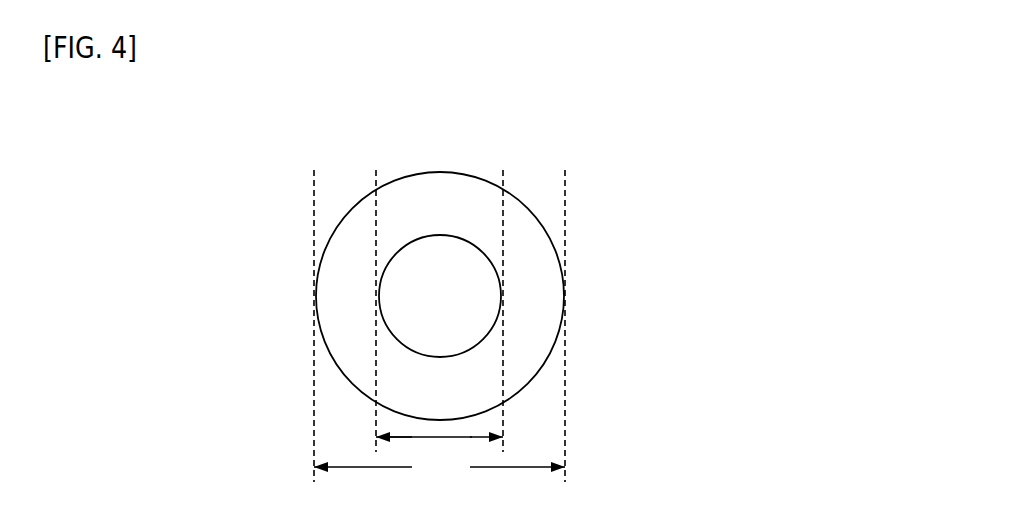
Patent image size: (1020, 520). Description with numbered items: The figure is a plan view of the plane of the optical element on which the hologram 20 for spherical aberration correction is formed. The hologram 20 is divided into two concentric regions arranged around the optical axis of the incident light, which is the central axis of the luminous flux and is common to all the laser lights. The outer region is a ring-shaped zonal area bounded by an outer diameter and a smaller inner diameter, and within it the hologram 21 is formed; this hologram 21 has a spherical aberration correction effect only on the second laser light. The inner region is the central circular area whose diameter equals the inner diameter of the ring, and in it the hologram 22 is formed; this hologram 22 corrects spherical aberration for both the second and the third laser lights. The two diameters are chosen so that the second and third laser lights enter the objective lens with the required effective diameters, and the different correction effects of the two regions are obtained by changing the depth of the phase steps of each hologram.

The hologram for spherical aberration correction 20 is at (296, 174).
The hologram 21 is at (536, 308).
The hologram 22 is at (470, 278).